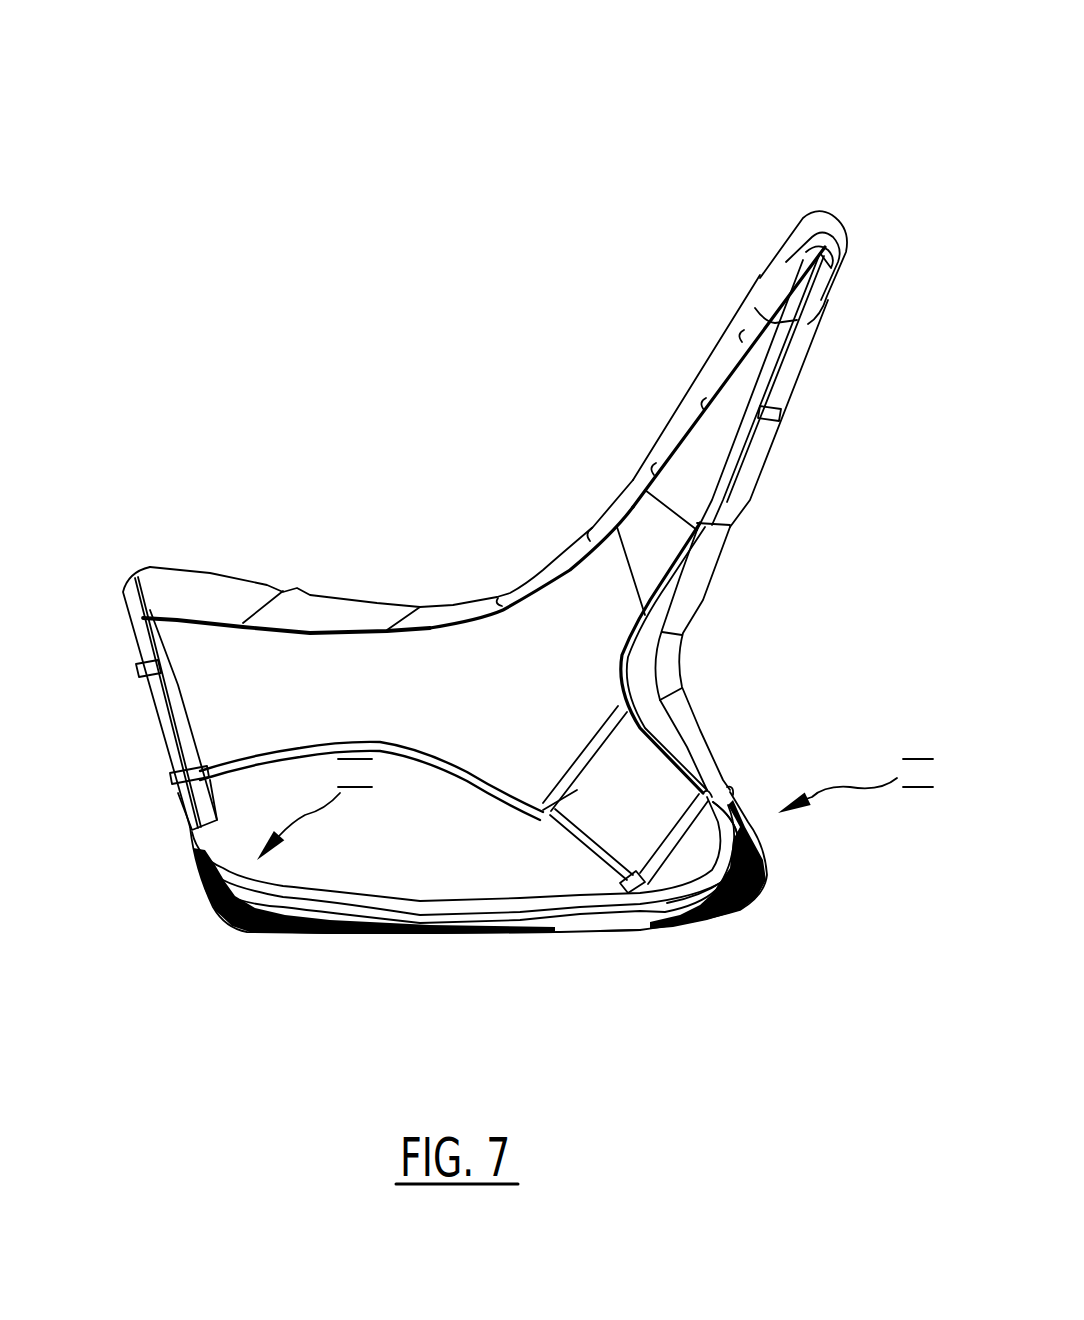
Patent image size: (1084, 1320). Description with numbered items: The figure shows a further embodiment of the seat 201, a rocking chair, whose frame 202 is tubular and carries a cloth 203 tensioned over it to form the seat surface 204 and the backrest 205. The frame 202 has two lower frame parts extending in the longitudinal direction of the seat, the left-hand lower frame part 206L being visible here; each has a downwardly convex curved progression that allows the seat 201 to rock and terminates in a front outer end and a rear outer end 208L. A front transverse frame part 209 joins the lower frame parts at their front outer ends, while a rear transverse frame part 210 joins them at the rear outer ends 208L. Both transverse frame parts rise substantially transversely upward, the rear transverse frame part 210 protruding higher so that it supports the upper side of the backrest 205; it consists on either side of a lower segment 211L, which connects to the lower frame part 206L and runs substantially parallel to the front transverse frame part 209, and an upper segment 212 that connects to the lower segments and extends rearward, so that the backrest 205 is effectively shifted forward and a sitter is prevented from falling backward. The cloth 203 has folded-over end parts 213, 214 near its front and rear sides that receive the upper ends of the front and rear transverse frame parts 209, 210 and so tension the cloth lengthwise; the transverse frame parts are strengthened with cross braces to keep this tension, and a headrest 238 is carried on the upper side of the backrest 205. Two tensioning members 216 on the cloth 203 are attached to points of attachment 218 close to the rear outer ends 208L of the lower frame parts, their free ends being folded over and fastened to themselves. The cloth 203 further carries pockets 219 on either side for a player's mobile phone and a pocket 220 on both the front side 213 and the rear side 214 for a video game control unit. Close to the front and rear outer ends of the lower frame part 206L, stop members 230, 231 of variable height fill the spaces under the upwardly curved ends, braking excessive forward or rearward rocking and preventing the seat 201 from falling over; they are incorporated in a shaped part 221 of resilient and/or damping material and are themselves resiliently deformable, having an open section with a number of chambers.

The seat 201 is at (478, 345).
The frame 202 is at (852, 636).
The cloth 203 is at (529, 539).
The seat surface 204 is at (373, 603).
The backrest 205 is at (710, 373).
The left-hand lower frame part 206L is at (450, 908).
The rear outer end of left-hand lower frame part 208L is at (703, 877).
The front transverse frame part 209 is at (152, 824).
The rear transverse frame part 210 is at (762, 663).
The left-hand lower segment of rear transverse frame part 211L is at (707, 767).
The upper segment of rear transverse frame part 212 is at (697, 572).
The folded-over end part at front side of cloth 213 is at (138, 634).
The folded-over end part at rear side of cloth 214 is at (793, 360).
The tensioning member 216 is at (553, 827).
The point of attachment 218 is at (620, 887).
The pocket 219 is at (575, 790).
The pocket 220 is at (757, 467).
The shaped part 221 is at (670, 975).
The stop member 230 is at (253, 877).
The stop member 231 is at (820, 881).
The headrest 238 is at (830, 222).